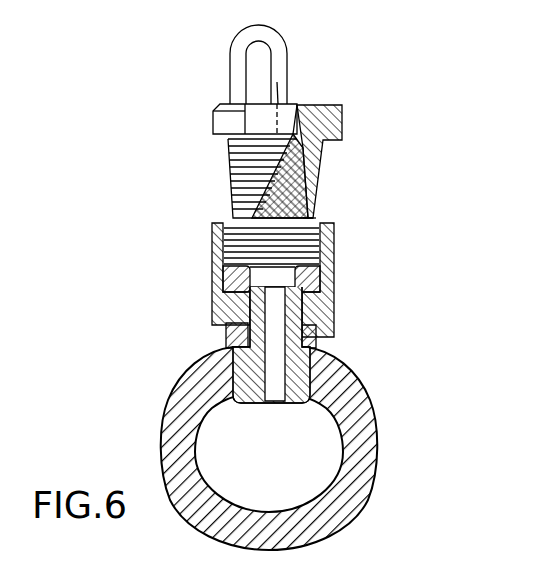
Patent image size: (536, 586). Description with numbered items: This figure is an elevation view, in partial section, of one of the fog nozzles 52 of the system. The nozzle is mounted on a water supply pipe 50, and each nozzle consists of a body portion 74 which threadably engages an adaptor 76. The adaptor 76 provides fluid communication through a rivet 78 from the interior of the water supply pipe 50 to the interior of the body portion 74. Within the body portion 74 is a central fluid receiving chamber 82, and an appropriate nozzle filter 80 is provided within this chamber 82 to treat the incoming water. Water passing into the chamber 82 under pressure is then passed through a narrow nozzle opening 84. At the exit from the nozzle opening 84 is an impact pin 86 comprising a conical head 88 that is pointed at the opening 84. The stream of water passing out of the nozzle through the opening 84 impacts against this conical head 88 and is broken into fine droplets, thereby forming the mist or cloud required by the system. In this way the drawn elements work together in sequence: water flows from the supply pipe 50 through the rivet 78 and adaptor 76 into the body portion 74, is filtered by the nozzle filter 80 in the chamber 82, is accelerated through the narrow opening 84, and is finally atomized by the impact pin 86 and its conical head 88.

The water supply pipe 50 is at (363, 438).
The fog nozzle 52 is at (355, 140).
The body portion 74 is at (232, 160).
The adaptor 76 is at (335, 275).
The rivet 78 is at (337, 320).
The nozzle filter 80 is at (323, 188).
The central fluid receiving chamber 82 is at (310, 219).
The nozzle opening 84 is at (272, 124).
The impact pin 86 is at (284, 44).
The conical head 88 is at (277, 82).